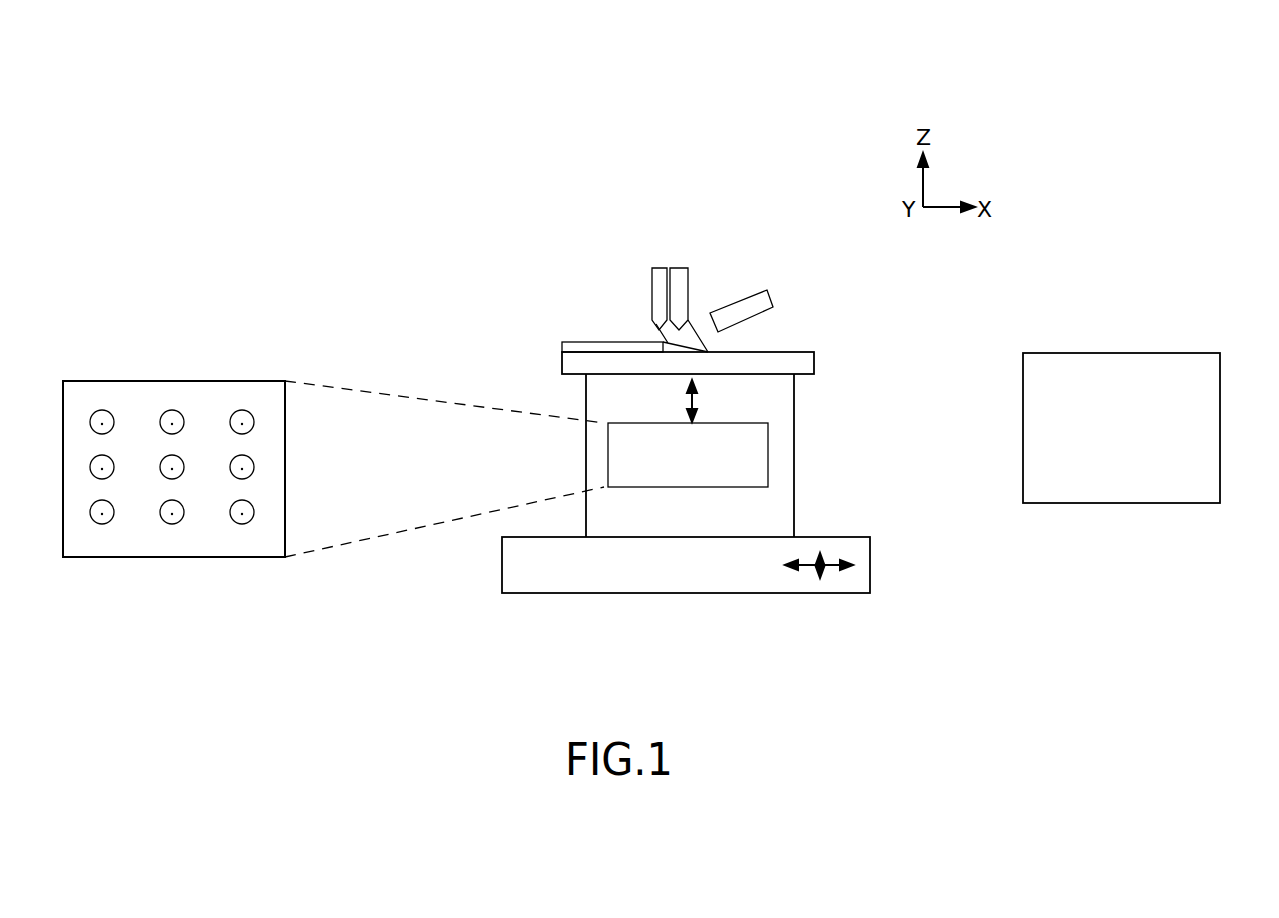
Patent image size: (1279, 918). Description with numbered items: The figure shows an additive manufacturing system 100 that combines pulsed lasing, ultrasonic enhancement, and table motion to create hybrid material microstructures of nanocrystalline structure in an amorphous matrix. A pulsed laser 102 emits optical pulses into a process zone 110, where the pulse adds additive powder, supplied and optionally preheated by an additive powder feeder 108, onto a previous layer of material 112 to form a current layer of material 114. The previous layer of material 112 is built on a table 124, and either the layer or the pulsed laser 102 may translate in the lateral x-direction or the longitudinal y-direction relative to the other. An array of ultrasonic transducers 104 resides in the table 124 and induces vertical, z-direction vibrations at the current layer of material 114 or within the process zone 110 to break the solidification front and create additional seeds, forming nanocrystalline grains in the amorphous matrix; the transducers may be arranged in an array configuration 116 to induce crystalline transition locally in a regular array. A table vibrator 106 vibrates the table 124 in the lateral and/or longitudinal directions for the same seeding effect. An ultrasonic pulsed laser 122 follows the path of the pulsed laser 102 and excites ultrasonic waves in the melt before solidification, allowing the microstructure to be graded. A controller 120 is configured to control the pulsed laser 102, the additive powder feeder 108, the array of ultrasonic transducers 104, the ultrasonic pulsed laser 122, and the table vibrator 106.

The additive manufacturing system 100 is at (452, 133).
The pulsed laser 102 is at (685, 300).
The array of ultrasonic transducers 104 is at (768, 430).
The table vibrator 106 is at (860, 565).
The additive powder feeder 108 is at (765, 308).
The process zone 110 is at (668, 338).
The previous layer of material 112 is at (562, 363).
The current layer of material 114 is at (593, 347).
The array configuration 116 is at (220, 390).
The controller 120 is at (1203, 372).
The ultrasonic pulsed laser 122 is at (665, 292).
The table 124 is at (586, 502).